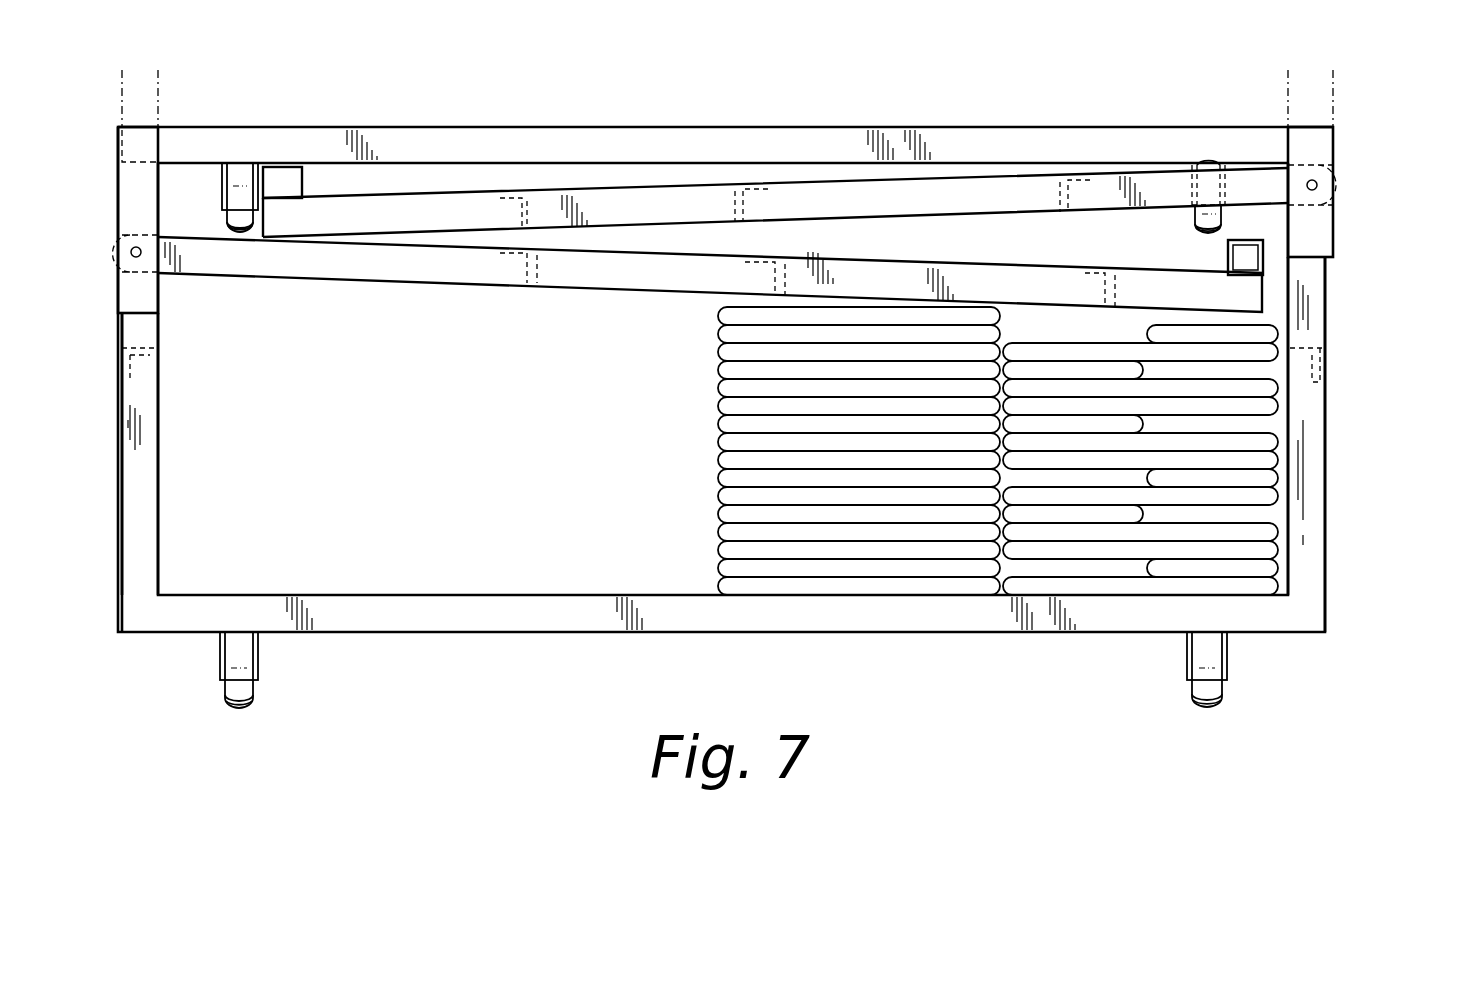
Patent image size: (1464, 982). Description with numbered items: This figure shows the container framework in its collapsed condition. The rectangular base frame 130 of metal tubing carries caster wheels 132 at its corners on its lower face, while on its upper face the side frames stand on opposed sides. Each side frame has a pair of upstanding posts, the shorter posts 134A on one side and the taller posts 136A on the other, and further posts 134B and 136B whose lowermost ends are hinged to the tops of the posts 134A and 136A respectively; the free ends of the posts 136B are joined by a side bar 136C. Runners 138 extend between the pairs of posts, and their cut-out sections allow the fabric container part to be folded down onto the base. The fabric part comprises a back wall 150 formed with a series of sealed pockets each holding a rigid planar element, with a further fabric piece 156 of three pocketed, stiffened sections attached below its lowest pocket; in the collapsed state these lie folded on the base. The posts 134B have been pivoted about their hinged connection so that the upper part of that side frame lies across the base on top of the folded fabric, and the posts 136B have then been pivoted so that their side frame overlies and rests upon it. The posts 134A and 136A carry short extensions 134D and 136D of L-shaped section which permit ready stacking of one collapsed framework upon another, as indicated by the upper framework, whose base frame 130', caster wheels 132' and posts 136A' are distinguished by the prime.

The base frame 130 is at (721, 379).
The base frame of upper collapsed framework 130' is at (725, 114).
The caster wheels 132 is at (761, 678).
The caster wheels of upper collapsed framework 132' is at (723, 163).
The upstanding posts 134A is at (137, 548).
The further posts 134B is at (345, 267).
The short extension 134D is at (142, 197).
The upstanding posts 136A is at (1358, 444).
The upstanding posts of upper collapsed framework 136A' is at (1358, 93).
The further posts 136B is at (947, 192).
The side bar 136C is at (288, 183).
The short extension 136D is at (1318, 233).
The runners 138 is at (145, 353).
The back wall 150 is at (683, 468).
The further fabric piece 156 is at (1268, 441).